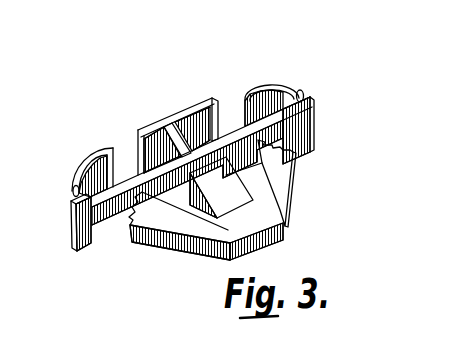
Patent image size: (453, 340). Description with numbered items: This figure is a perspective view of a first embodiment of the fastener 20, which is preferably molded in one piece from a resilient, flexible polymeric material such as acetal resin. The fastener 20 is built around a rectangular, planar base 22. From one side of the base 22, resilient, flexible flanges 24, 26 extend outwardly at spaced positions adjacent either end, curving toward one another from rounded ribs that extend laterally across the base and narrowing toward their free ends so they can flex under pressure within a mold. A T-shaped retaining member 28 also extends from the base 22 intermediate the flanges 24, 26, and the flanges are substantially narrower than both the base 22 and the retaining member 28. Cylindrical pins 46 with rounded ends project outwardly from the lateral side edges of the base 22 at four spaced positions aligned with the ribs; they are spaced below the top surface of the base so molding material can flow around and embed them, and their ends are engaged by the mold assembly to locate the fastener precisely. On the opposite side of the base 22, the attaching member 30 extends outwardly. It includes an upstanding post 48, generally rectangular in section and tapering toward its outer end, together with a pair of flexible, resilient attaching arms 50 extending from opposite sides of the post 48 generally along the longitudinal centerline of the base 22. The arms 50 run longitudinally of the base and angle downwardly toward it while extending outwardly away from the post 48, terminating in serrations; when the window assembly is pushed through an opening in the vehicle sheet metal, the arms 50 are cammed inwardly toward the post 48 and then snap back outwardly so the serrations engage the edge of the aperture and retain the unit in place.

The fastener 20 is at (313, 76).
The base 22 is at (92, 246).
The flange 24 is at (262, 92).
The flange 26 is at (110, 148).
The T-shaped retaining member 28 is at (167, 119).
The attaching member 30 is at (308, 220).
The pin 46 is at (78, 192).
The post 48 is at (240, 207).
The attaching arm 50 is at (188, 247).